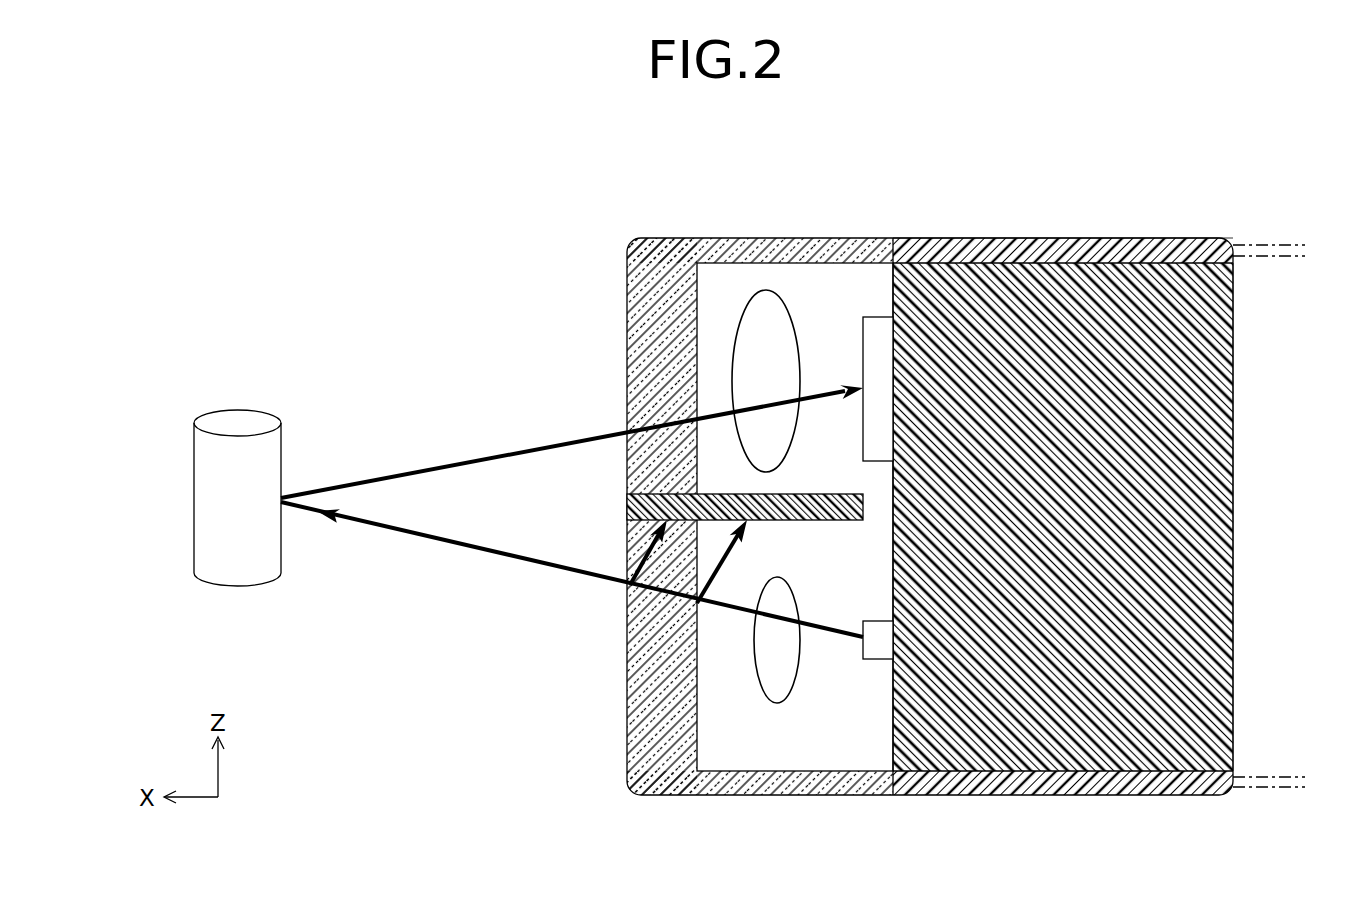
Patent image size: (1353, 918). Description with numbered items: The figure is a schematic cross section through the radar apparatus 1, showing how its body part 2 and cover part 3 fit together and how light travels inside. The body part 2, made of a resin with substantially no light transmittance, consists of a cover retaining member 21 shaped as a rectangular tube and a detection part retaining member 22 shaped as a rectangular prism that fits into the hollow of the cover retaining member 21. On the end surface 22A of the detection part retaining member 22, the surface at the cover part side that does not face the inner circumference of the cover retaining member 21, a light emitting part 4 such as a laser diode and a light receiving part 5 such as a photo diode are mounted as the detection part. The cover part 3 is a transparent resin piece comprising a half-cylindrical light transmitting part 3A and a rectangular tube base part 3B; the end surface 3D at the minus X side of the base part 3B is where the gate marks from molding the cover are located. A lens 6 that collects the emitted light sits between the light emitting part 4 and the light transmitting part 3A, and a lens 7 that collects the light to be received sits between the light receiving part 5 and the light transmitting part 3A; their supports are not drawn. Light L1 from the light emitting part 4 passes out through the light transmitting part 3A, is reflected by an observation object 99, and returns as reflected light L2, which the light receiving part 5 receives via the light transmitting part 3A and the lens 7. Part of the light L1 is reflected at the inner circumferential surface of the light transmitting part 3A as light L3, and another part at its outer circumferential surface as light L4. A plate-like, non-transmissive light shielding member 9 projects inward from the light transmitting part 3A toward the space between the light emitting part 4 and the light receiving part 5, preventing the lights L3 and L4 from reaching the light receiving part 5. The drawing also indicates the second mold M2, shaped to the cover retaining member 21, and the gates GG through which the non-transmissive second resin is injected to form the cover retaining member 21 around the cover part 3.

The radar apparatus 1 is at (1168, 174).
The body part 2 is at (1143, 193).
The cover retaining member 21 is at (1062, 240).
The detection part retaining member 22 is at (987, 277).
The surface 22A is at (890, 283).
The cover part 3 is at (669, 233).
The light transmitting part 3A is at (632, 752).
The base part 3B is at (788, 787).
The end surface 3D is at (894, 250).
The light emitting part 4 is at (877, 650).
The light receiving part 5 is at (868, 350).
The lens 6 is at (773, 680).
The lens 7 is at (758, 337).
The light shielding member 9 is at (645, 505).
The observation object 99 is at (208, 510).
The light L1 is at (457, 557).
The reflected light L2 is at (458, 452).
The light L3 is at (735, 558).
The light L4 is at (650, 545).
The second mold M2 is at (1182, 243).
The gates GG is at (1275, 245).